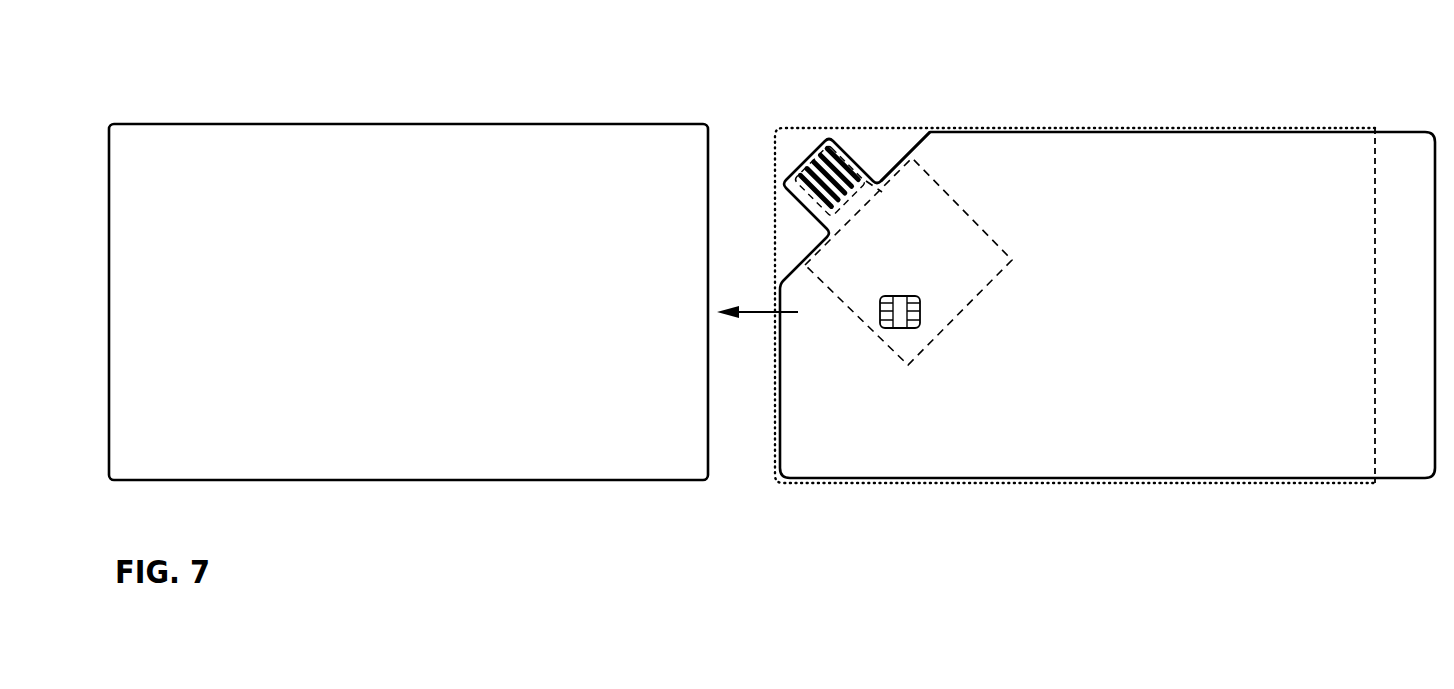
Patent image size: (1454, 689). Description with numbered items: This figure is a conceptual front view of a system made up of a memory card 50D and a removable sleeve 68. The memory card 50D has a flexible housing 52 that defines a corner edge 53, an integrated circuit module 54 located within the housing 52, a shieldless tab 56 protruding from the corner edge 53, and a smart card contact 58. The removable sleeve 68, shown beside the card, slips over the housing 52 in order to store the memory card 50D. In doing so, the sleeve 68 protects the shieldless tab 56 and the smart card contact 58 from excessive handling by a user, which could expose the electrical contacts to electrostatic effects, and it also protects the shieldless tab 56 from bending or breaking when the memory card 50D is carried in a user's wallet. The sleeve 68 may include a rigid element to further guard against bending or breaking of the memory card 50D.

The memory card 50D is at (1341, 78).
The flexible housing 52 is at (1213, 150).
The corner edge 53 is at (928, 146).
The integrated circuit module 54 is at (978, 268).
The shieldless tab 56 is at (869, 136).
The smart card contact 58 is at (850, 314).
The removable sleeve 68 is at (537, 150).